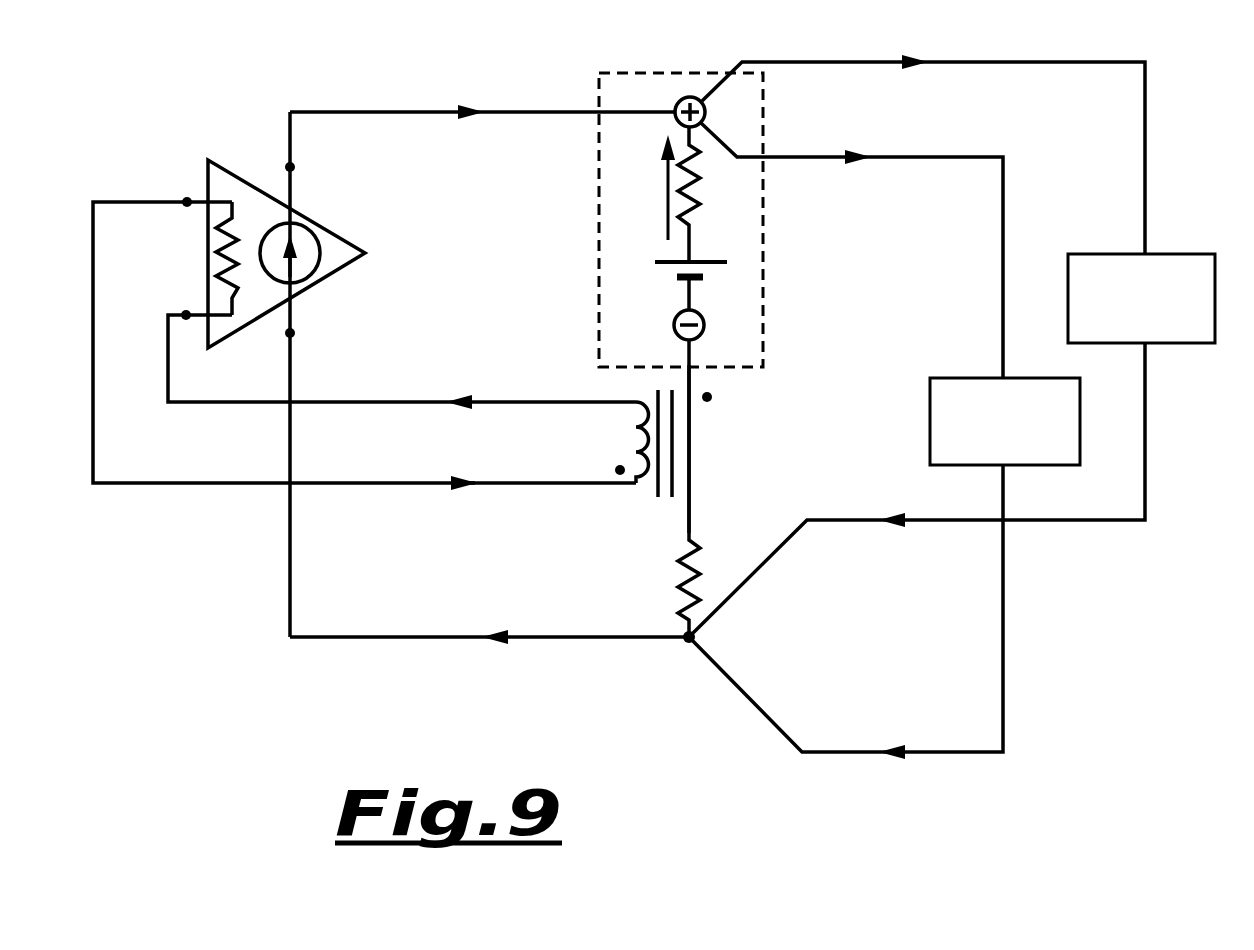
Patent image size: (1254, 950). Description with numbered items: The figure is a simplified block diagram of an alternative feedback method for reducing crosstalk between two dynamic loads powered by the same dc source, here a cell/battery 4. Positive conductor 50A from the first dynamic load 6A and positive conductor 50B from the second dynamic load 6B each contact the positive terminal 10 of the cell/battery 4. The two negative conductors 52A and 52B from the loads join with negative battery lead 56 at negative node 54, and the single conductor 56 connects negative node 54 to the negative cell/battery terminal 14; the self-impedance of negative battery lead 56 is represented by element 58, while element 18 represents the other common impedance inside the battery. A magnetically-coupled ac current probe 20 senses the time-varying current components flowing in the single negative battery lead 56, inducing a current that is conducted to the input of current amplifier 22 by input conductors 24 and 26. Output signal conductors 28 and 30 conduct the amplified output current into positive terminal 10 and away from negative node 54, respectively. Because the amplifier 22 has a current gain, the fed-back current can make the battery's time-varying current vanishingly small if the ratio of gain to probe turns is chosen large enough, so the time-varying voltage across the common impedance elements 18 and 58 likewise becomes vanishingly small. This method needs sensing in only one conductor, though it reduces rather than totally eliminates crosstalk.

The cell/battery 4 is at (723, 220).
The Dynamic Load 1 6A is at (985, 395).
The Dynamic Load 2 6B is at (1127, 271).
The positive terminal 10 is at (662, 81).
The negative cell/battery terminal 14 is at (752, 421).
The common impedance element 18 is at (606, 218).
The magnetically-coupled ac current probe 20 is at (562, 413).
The current amplifier 22 is at (258, 373).
The input conductor 24 is at (364, 343).
The input conductor 26 is at (375, 359).
The output signal conductor 28 is at (476, 72).
The output signal conductor 30 is at (453, 589).
The positive conductor 50A is at (852, 250).
The positive conductor 50B is at (923, 136).
The negative conductor 52A is at (846, 612).
The negative conductor 52B is at (917, 490).
The negative node 54 is at (635, 679).
The negative battery lead 56 is at (739, 449).
The self-impedance of negative battery lead 58 is at (647, 581).